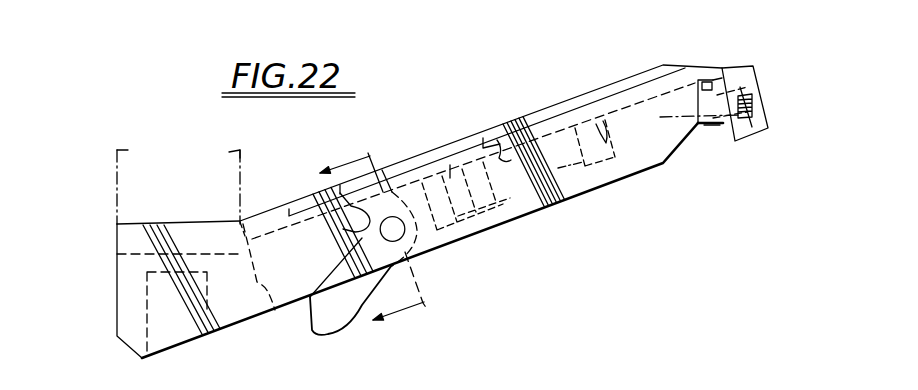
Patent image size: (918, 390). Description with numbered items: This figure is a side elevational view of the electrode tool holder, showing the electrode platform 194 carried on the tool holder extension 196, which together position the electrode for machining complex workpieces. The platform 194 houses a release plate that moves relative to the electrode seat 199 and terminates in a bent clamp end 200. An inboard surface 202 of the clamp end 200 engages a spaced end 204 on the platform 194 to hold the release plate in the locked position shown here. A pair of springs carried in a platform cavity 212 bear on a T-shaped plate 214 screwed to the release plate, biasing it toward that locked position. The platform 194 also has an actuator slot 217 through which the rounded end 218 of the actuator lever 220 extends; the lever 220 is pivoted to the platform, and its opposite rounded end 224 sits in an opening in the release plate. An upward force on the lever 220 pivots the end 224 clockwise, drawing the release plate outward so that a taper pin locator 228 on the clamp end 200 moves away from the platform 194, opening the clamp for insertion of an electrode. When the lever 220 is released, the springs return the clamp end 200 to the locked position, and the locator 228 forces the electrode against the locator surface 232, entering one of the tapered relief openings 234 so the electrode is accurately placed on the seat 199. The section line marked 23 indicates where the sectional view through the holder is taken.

The tool holder extension 196 is at (117, 172).
The electrode platform 194 is at (225, 331).
The actuator slot 217 is at (273, 318).
The section line 23- 23 is at (373, 241).
The opposite end of actuator lever 224 is at (382, 170).
The actuator lever 220 is at (324, 317).
The rounded end of actuator lever 218 is at (338, 334).
The T-shaped plate 214 is at (498, 132).
The platform cavity 212 is at (606, 156).
The tapered relief openings 234 is at (687, 108).
The spaced end on platform 204 is at (711, 78).
The electrode seat 199 is at (717, 92).
The bent clamp end 200 is at (733, 88).
The inboard surface 202 is at (730, 134).
The locator surface 232 is at (703, 127).
The taper pin locator 228 is at (718, 128).